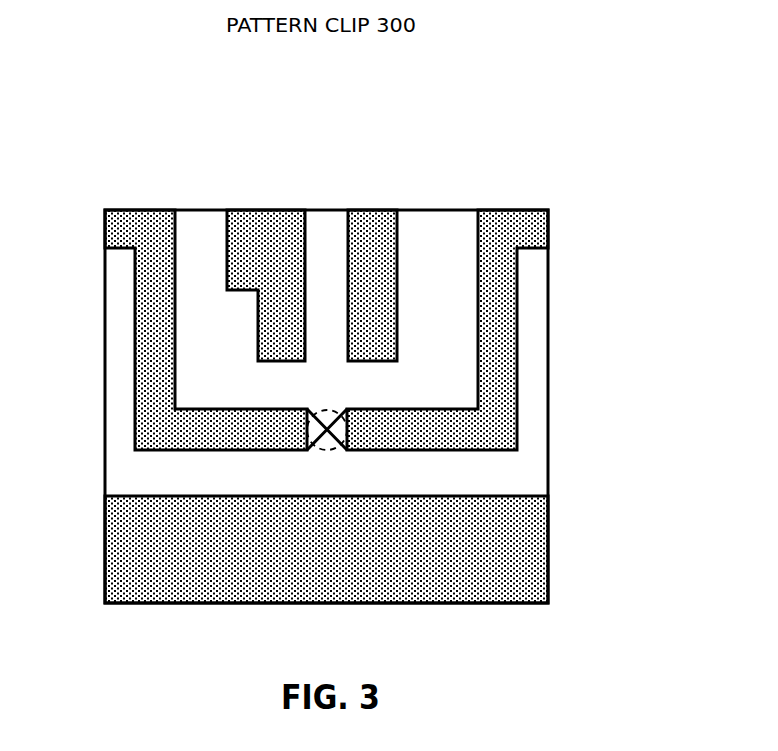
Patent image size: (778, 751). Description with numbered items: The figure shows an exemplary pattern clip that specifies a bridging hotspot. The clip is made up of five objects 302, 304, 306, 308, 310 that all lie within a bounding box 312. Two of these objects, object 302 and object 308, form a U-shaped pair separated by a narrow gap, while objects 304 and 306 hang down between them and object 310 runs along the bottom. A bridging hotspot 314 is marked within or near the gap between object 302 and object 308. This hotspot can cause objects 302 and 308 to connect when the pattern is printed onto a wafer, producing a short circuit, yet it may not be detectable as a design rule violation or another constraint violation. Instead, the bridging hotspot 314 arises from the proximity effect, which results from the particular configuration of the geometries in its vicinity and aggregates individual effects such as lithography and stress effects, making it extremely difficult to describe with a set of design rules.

The object 302 is at (135, 328).
The object 304 is at (255, 210).
The object 306 is at (367, 210).
The object 308 is at (520, 348).
The object 310 is at (235, 510).
The bounding box 312 is at (442, 210).
The bridging hotspot 314 is at (316, 407).